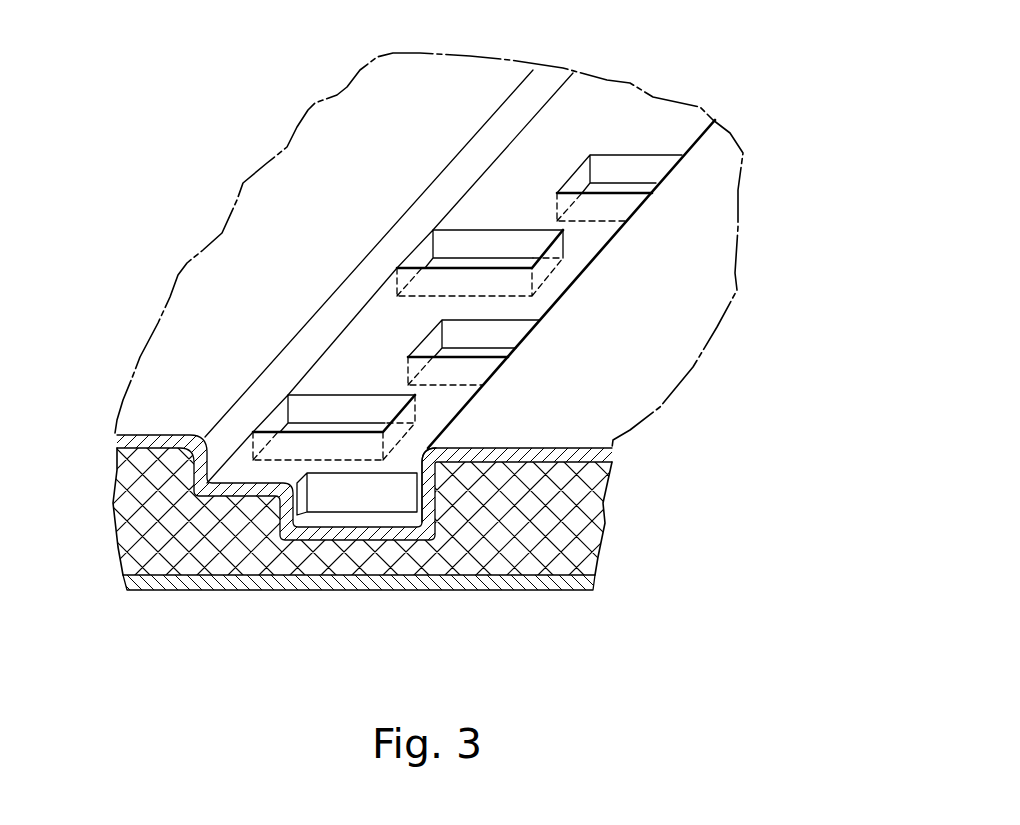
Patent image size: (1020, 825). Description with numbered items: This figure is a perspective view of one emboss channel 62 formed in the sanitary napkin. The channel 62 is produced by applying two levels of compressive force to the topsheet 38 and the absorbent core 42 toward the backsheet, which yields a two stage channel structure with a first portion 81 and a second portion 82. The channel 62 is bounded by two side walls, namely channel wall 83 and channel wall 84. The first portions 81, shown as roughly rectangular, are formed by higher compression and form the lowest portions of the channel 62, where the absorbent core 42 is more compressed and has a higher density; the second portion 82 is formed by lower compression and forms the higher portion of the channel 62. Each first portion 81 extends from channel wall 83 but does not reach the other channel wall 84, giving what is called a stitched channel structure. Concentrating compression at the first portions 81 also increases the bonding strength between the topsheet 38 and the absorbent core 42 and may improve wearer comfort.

The channel 62 is at (613, 122).
The topsheet 38 is at (616, 382).
The second portion 82 is at (360, 335).
The channel wall 83 is at (248, 417).
The channel wall 84 is at (418, 455).
The first portion 81 is at (543, 268).
The absorbent core 42 is at (580, 557).